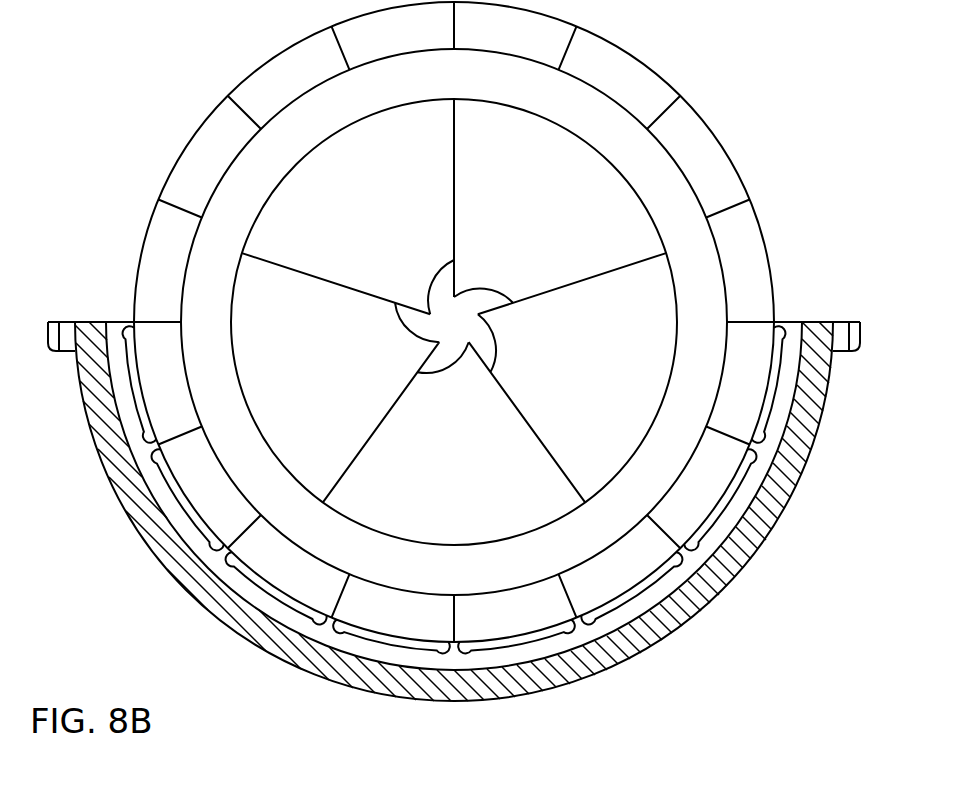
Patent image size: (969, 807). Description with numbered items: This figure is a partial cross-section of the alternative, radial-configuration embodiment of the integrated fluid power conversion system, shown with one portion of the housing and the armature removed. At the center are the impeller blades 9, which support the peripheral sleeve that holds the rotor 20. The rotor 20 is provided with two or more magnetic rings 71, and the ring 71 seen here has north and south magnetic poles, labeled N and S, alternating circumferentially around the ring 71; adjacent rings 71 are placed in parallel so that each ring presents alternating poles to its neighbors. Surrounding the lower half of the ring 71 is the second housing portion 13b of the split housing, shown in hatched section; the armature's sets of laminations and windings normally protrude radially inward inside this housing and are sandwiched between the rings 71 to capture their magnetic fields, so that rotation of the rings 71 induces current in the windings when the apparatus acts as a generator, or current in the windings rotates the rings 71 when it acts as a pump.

The second housing portion 13b is at (727, 563).
The magnetic ring 71 is at (170, 232).
The rotor 20 is at (690, 211).
The impeller blades 9 is at (547, 228).